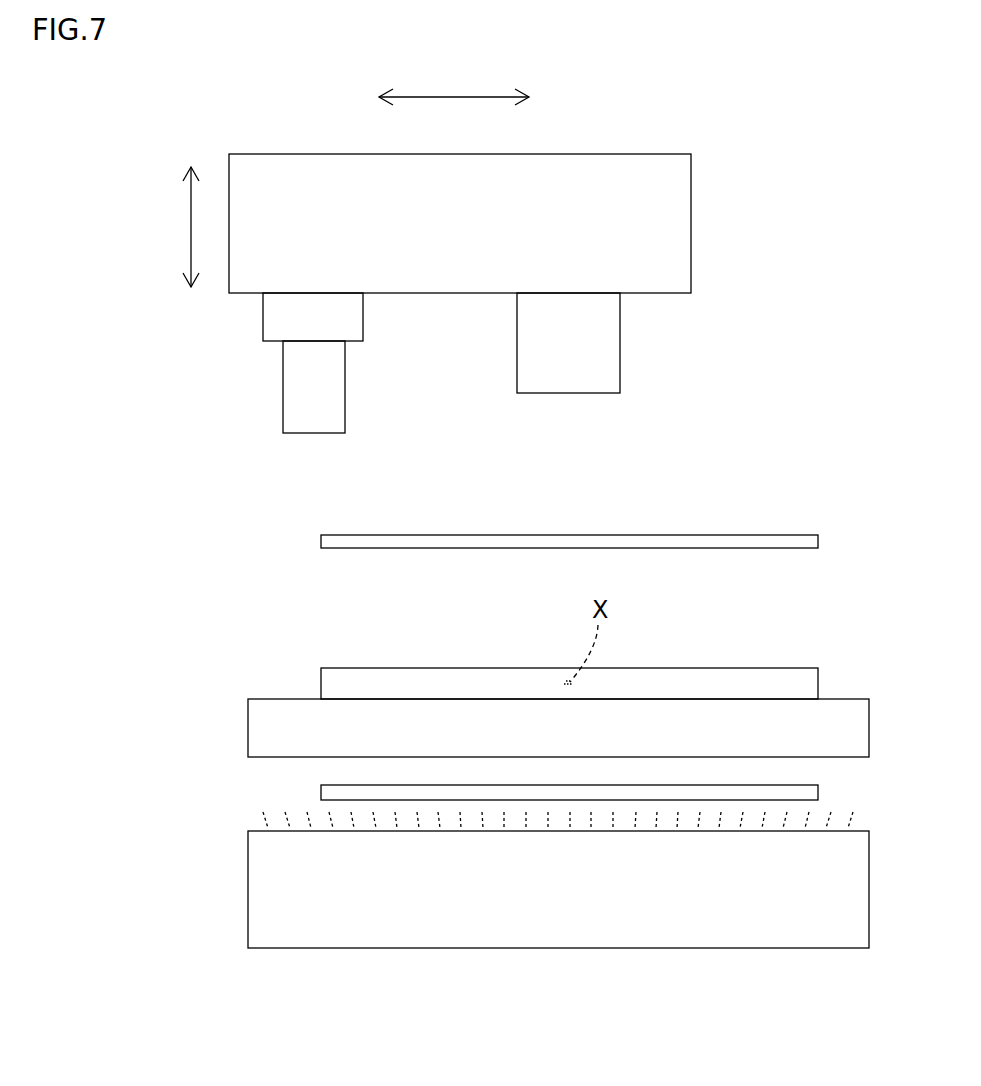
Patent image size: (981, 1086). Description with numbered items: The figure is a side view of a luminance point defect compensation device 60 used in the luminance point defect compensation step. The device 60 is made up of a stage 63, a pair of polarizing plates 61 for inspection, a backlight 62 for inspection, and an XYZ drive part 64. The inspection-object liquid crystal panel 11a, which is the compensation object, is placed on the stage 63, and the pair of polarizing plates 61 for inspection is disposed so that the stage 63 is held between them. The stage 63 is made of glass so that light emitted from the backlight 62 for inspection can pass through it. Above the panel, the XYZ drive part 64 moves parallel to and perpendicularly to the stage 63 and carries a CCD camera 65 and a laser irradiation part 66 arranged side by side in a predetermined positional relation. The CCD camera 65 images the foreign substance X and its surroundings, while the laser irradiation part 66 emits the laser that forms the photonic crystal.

The luminance point defect compensation device 60 is at (180, 636).
The polarizing plates for inspection 61 is at (795, 538).
The backlight for inspection 62 is at (357, 928).
The stage 63 is at (258, 718).
The XYZ drive part 64 is at (605, 178).
The CCD camera 65 is at (605, 350).
The laser irradiation part 66 is at (298, 387).
The inspection-object liquid crystal panel 11a is at (798, 680).